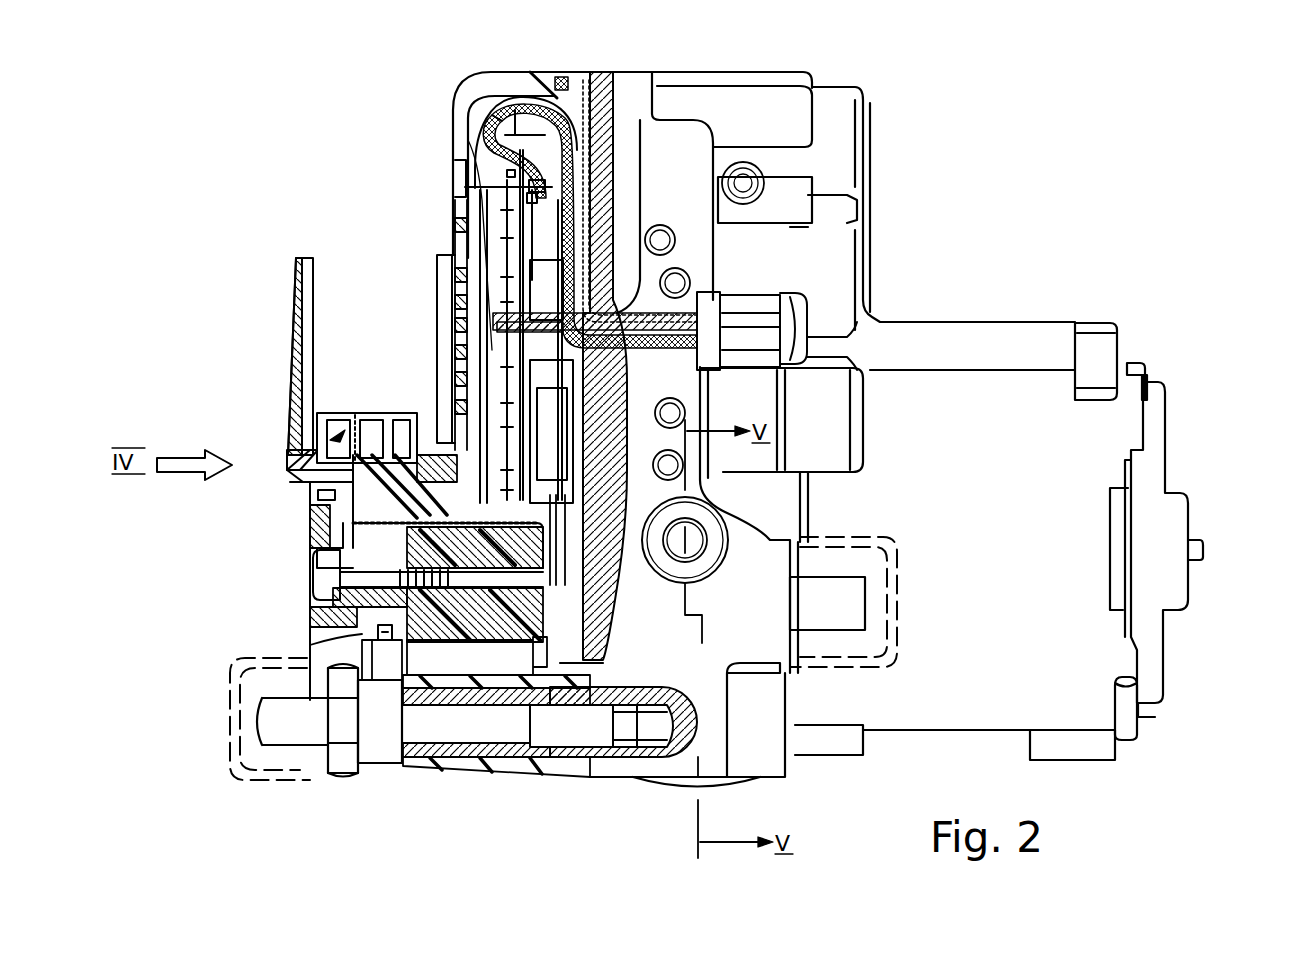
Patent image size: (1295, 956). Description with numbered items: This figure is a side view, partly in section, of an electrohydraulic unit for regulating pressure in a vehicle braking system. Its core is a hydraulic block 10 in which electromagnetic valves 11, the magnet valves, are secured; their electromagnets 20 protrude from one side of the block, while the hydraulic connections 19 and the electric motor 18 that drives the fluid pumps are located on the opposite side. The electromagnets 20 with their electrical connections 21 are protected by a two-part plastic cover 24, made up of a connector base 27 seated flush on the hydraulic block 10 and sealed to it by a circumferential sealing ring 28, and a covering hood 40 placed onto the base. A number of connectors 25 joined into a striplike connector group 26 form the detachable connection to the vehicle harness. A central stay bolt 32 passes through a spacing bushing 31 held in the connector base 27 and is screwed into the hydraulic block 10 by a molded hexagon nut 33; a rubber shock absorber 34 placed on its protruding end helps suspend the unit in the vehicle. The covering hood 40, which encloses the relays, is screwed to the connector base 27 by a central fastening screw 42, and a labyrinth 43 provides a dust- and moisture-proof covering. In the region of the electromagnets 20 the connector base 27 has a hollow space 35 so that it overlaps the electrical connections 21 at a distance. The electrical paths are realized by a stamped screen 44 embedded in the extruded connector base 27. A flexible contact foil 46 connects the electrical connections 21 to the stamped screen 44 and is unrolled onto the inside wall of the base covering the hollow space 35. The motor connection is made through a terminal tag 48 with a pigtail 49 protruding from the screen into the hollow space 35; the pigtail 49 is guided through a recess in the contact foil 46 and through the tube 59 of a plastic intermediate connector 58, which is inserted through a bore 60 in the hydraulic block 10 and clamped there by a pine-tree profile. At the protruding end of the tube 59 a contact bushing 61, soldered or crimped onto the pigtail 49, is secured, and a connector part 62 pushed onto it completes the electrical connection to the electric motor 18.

The hydraulic block 10 is at (733, 112).
The electromagnetic valve 11 is at (610, 540).
The electric motor 18 is at (1095, 456).
The hydraulic connection 19 is at (877, 150).
The electromagnet 20 is at (500, 243).
The electrical connection 21 is at (520, 273).
The cover 24 is at (437, 106).
The connector 25 is at (357, 410).
The connector group 26 is at (295, 470).
The connector base 27 is at (497, 85).
The sealing ring 28 is at (568, 78).
The spacing bushing 31 is at (505, 777).
The stay bolt 32 is at (580, 737).
The hexagon nut 33 is at (343, 768).
The rubber shock absorber 34 is at (240, 693).
The hollow space 35 is at (476, 162).
The covering hood 40 is at (320, 612).
The fastening screw 42 is at (325, 578).
The labyrinth 43 is at (375, 633).
The stamped screen 44 is at (464, 183).
The contact foil 46 is at (530, 110).
The terminal tag 48 is at (498, 205).
The pigtail 49 is at (492, 110).
The intermediate connector 58 is at (545, 328).
The tube 59 is at (520, 323).
The bore 60 is at (637, 282).
The contact bushing 61 is at (722, 302).
The connector part 62 is at (790, 298).